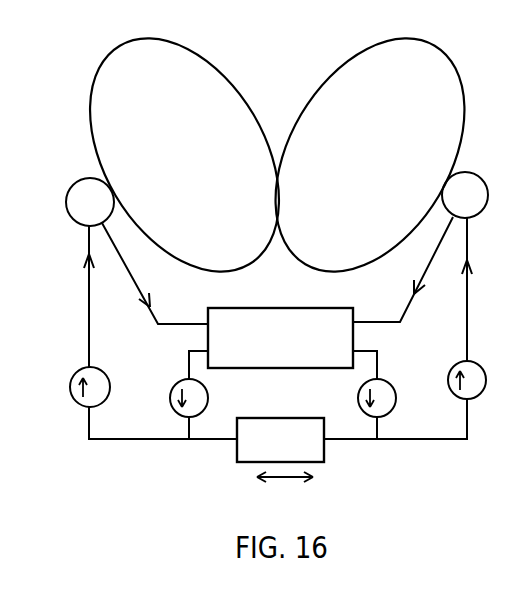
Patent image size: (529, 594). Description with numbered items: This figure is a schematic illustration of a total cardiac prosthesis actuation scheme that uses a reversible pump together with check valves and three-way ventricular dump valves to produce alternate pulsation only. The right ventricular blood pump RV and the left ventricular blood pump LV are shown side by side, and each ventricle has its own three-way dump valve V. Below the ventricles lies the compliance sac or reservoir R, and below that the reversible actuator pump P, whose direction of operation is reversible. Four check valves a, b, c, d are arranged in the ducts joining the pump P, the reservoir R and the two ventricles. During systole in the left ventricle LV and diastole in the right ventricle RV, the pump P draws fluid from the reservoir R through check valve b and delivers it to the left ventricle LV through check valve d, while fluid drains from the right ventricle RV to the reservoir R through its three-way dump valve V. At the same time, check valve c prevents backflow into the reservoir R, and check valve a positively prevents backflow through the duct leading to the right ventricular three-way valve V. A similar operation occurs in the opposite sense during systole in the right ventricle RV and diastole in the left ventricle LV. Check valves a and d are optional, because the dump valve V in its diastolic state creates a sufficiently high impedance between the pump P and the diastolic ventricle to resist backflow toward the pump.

The check valve a is at (70, 387).
The check valve b is at (170, 398).
The check valve c is at (396, 399).
The check valve d is at (486, 381).
The compliance sac or reservoir R is at (280, 338).
The actuator pump P is at (280, 440).
The three-way dump valve V is at (277, 199).
The right ventricular blood pump RV is at (184, 155).
The left ventricular blood pump LV is at (369, 155).